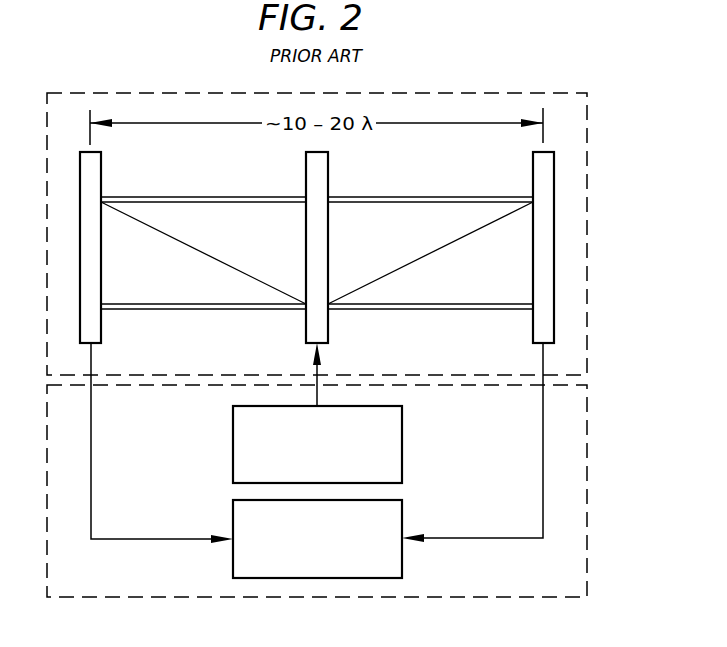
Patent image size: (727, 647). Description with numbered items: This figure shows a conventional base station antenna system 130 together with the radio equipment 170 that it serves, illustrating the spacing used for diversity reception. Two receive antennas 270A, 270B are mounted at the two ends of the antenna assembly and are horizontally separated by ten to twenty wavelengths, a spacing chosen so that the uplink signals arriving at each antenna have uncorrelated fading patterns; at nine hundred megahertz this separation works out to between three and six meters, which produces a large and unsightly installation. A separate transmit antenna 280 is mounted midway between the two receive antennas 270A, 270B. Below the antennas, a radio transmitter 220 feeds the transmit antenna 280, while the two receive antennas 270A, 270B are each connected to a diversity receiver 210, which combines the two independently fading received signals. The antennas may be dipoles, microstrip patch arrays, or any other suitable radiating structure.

The conventional base station antenna system 130 is at (587, 243).
The radio equipment 170 is at (587, 482).
The receive antenna 270A is at (101, 178).
The receive antenna 270B is at (533, 175).
The transmit antenna 280 is at (328, 176).
The radio transmitter 220 is at (402, 447).
The diversity receiver 210 is at (402, 565).